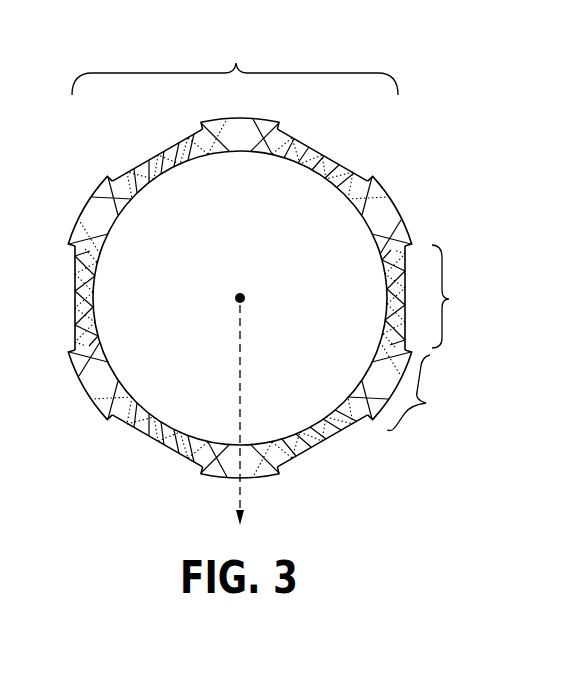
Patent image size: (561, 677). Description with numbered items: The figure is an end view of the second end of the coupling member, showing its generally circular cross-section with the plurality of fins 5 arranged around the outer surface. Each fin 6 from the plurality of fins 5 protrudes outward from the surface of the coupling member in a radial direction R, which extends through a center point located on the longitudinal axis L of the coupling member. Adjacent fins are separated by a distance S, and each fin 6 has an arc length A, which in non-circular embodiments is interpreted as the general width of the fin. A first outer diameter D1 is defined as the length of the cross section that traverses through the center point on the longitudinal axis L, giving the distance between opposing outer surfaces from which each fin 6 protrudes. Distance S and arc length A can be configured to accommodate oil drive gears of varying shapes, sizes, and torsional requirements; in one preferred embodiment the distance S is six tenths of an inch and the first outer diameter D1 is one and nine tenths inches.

The plurality of fins 5 is at (226, 478).
The fin 6 is at (239, 298).
The longitudinal axis L is at (230, 301).
The radial direction R is at (251, 415).
The first outer diameter D1 is at (235, 62).
The distance S is at (452, 296).
The arc length A is at (416, 393).